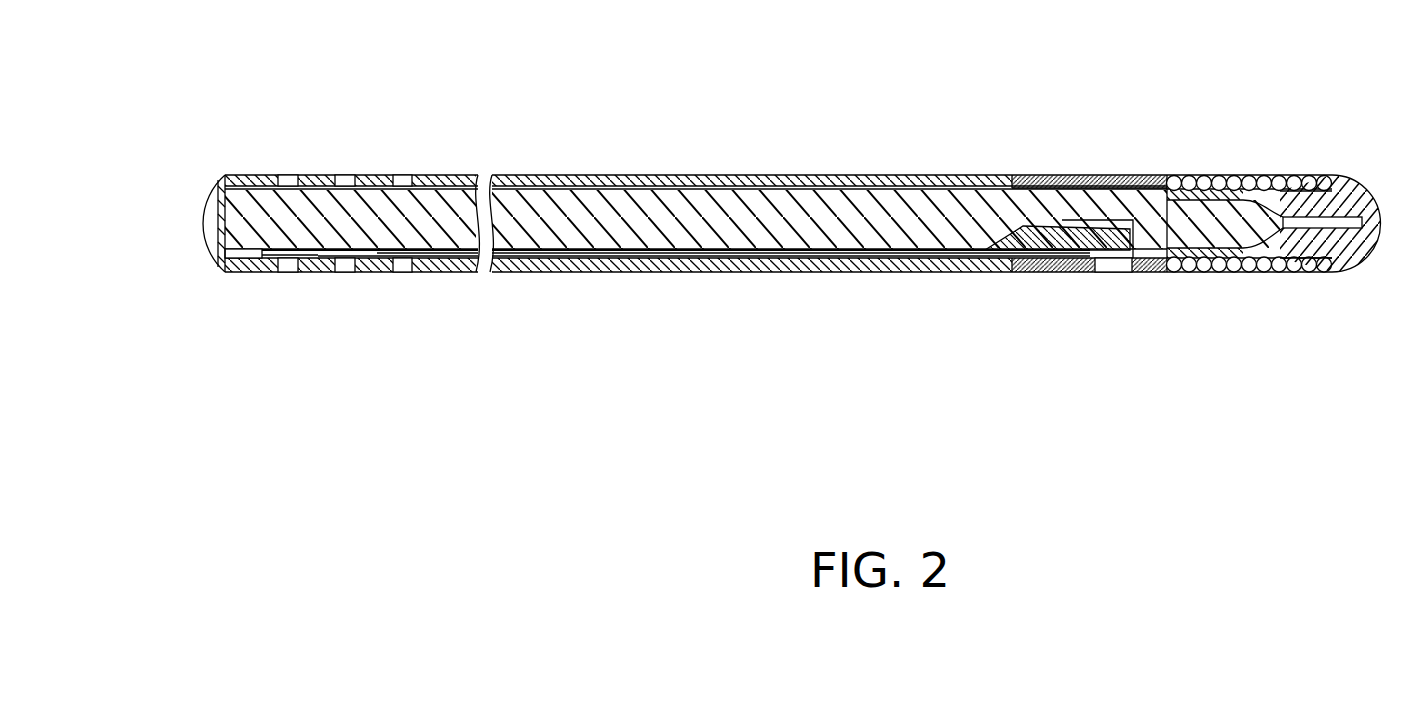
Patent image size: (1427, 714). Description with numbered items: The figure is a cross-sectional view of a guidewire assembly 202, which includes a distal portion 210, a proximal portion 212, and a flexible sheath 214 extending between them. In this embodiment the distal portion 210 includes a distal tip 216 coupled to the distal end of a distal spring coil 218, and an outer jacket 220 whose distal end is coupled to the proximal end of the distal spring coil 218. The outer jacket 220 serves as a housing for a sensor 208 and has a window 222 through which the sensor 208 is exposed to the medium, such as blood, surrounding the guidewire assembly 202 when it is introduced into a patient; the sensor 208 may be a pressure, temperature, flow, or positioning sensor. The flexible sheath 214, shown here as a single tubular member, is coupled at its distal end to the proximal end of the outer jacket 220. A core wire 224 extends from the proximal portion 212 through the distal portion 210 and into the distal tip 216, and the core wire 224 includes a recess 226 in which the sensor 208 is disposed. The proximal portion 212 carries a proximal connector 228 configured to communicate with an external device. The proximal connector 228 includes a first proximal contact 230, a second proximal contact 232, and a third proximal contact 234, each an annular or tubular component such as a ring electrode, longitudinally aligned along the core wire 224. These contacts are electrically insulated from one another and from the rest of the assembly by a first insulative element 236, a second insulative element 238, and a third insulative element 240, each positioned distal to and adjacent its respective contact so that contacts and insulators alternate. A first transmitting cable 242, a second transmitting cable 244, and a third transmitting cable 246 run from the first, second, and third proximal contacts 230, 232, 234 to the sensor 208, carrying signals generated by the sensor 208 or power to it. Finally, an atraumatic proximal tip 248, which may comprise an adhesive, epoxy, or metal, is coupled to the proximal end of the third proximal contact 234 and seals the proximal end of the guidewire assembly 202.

The guidewire assembly 202 is at (648, 112).
The sensor 208 is at (1094, 258).
The distal portion 210 is at (1155, 161).
The proximal portion 212 is at (398, 129).
The flexible sheath 214 is at (855, 273).
The distal tip 216 is at (1357, 262).
The distal spring coil 218 is at (1248, 273).
The outer jacket 220 is at (1059, 175).
The window 222 is at (1110, 273).
The core wire 224 is at (548, 232).
The recess 226 is at (1112, 222).
The proximal connector 228 is at (415, 302).
The first proximal contact 230 is at (373, 273).
The second proximal contact 232 is at (320, 273).
The third proximal contact 234 is at (250, 273).
The first insulative element 236 is at (400, 175).
The second insulative element 238 is at (343, 175).
The third insulative element 240 is at (284, 175).
The first transmitting cable 242 is at (745, 252).
The second transmitting cable 244 is at (750, 254).
The third transmitting cable 246 is at (755, 257).
The proximal tip 248 is at (201, 240).